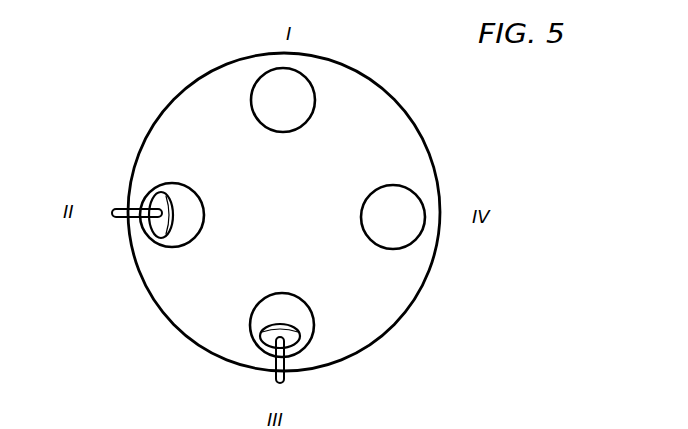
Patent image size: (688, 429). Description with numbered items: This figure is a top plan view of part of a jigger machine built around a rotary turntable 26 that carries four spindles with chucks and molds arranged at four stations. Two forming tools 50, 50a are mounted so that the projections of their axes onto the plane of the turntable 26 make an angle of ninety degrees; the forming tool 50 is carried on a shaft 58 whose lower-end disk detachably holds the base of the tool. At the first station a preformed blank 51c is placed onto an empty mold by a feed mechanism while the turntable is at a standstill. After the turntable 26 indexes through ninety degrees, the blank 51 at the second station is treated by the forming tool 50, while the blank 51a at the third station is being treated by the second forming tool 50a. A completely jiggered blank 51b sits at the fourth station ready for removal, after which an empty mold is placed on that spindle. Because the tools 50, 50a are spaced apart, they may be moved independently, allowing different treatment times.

The turntable 26 is at (188, 125).
The forming tool 50 is at (145, 242).
The second forming tool 50a is at (250, 342).
The blank 51 is at (192, 217).
The blank 51a is at (283, 305).
The completely jiggered blank 51b is at (400, 230).
The preformed blank 51c is at (297, 95).
The shaft 58 is at (122, 205).